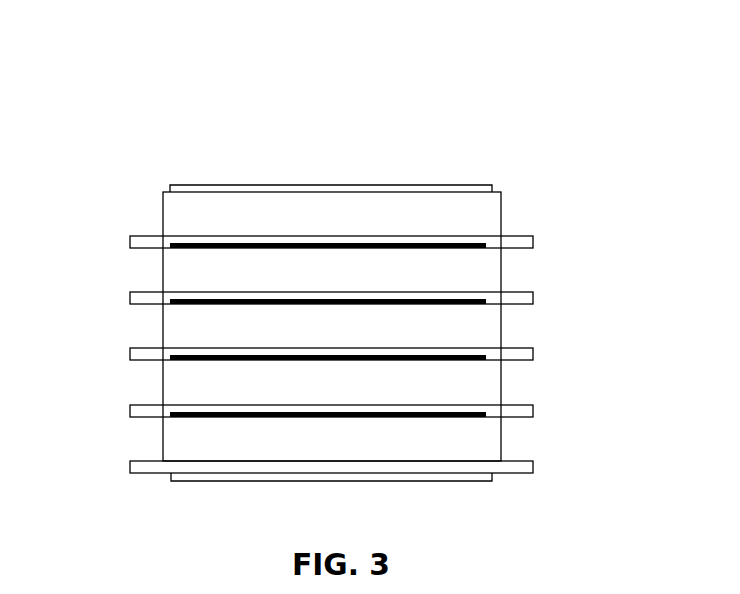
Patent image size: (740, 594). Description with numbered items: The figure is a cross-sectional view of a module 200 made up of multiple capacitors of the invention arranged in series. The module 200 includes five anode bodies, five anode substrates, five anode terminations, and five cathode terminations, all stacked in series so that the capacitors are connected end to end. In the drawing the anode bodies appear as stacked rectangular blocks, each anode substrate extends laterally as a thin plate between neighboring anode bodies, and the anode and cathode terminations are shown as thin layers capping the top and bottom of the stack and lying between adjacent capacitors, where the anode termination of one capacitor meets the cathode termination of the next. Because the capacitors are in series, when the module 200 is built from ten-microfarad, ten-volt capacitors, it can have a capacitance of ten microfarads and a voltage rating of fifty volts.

The module 200 is at (214, 148).